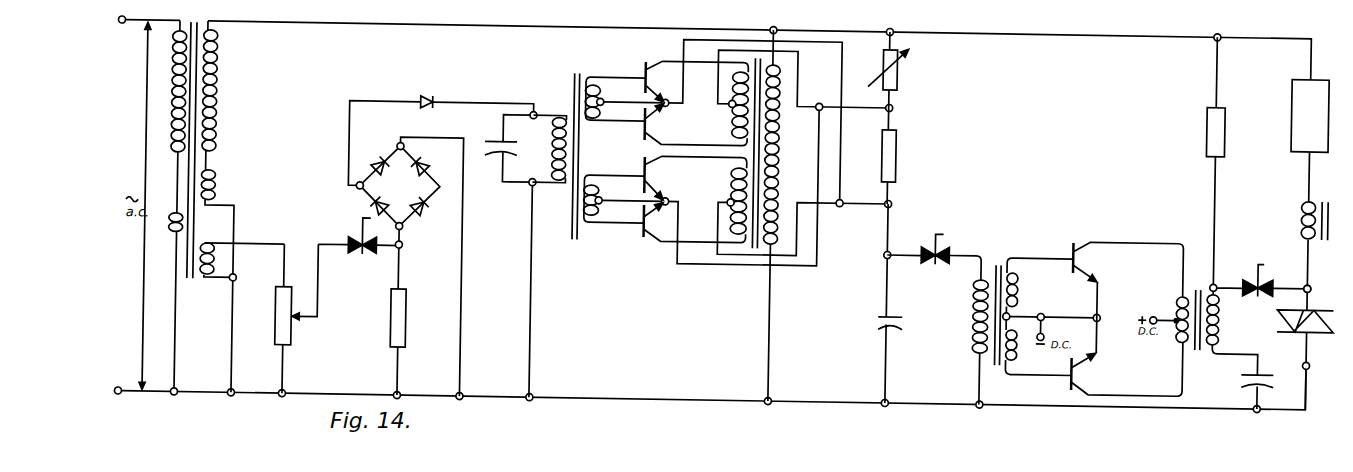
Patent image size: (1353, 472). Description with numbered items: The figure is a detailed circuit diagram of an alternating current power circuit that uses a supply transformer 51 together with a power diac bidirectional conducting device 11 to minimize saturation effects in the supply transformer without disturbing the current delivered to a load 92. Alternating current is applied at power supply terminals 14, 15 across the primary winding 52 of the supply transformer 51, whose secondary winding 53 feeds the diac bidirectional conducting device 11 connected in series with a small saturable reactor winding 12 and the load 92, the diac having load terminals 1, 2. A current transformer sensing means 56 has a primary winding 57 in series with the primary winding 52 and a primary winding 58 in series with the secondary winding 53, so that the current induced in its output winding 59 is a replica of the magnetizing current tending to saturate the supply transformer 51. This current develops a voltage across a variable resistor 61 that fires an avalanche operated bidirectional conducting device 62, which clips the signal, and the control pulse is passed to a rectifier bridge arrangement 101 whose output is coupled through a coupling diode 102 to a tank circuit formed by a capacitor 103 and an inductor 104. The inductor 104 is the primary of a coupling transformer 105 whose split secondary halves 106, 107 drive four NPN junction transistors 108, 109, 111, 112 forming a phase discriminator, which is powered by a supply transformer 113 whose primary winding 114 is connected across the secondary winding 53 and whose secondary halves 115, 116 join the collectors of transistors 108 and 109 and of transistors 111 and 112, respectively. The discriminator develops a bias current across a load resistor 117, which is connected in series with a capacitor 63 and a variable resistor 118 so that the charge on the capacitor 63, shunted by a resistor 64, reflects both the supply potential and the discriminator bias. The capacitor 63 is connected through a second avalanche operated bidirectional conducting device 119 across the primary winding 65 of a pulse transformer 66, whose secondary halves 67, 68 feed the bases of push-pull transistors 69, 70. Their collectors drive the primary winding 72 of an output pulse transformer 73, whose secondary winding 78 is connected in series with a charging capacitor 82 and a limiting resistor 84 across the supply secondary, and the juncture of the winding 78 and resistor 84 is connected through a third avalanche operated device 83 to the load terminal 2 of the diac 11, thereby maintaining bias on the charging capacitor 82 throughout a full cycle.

The alternating current power supply terminal 14 is at (126, 22).
The alternating current power supply terminal 15 is at (126, 392).
The supply transformer 51 is at (250, 65).
The primary winding 52 is at (180, 91).
The secondary winding 53 is at (218, 80).
The current transformer sensing means 56 is at (204, 300).
The primary winding 57 is at (174, 230).
The primary winding 58 is at (219, 180).
The output winding 59 is at (219, 242).
The variable resistor 61 is at (297, 334).
The avalanche operated conductivity controlled bidirectional conducting device 62 is at (351, 251).
The capacitor 63 is at (894, 297).
The resistor 64 is at (411, 320).
The primary winding 65 is at (977, 297).
The pulse transformer 66 is at (1016, 238).
The secondary winding half 67 is at (1024, 268).
The secondary winding half 68 is at (1022, 342).
The NPN junction transistor 69 is at (1077, 233).
The transistor 70 is at (1075, 372).
The primary winding 72 is at (1182, 281).
The output pulse transformer 73 is at (1212, 361).
The secondary winding 78 is at (1224, 298).
The charging capacitor 82 is at (1266, 357).
The third avalanche operated device 83 is at (1250, 265).
The limiting resistor 84 is at (1208, 103).
The load 92 is at (1293, 133).
The rectifier bridge arrangement 101 is at (413, 187).
The coupling diode 102 is at (428, 91).
The capacitor 103 is at (521, 131).
The inductor 104 is at (558, 165).
The coupling transformer 105 is at (591, 64).
The secondary winding half 106 is at (602, 83).
The secondary winding half 107 is at (602, 203).
The NPN junction transistor 108 is at (646, 55).
The NPN junction transistor 109 is at (644, 132).
The NPN junction transistor 111 is at (646, 158).
The NPN junction transistor 112 is at (646, 233).
The supply transformer 113 is at (809, 125).
The primary winding 114 is at (781, 147).
The secondary winding half 115 is at (733, 121).
The secondary winding half 116 is at (734, 173).
The load resistor 117 is at (899, 131).
The variable resistor 118 is at (899, 64).
The second avalanche operated bidirectional conducting device 119 is at (938, 252).
The saturable reactor winding 12 is at (1304, 193).
The diac bidirectional conducting device 11 is at (1283, 291).
The load terminal 1 is at (1316, 347).
The load terminal 2 is at (1316, 270).